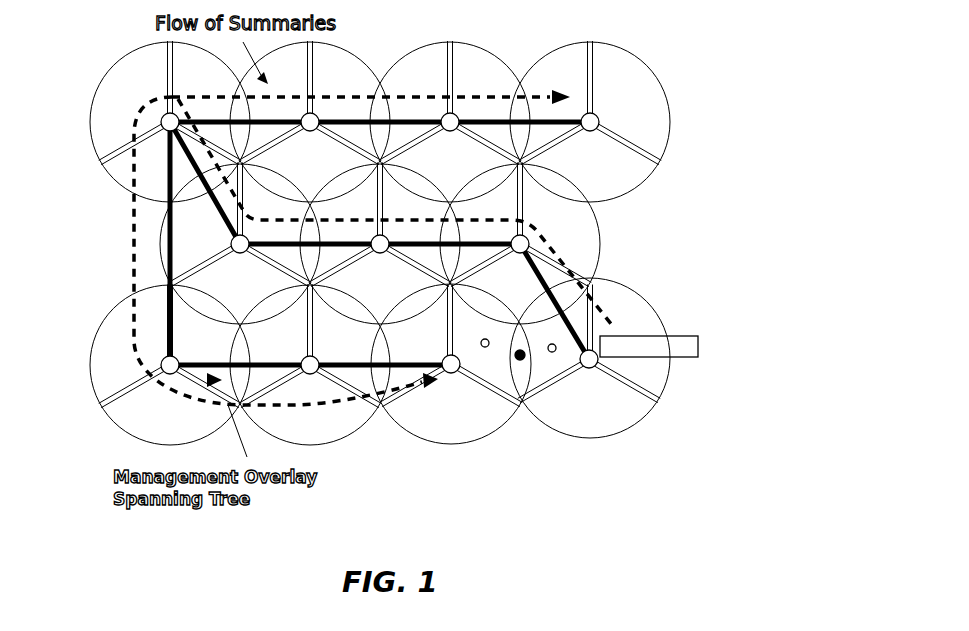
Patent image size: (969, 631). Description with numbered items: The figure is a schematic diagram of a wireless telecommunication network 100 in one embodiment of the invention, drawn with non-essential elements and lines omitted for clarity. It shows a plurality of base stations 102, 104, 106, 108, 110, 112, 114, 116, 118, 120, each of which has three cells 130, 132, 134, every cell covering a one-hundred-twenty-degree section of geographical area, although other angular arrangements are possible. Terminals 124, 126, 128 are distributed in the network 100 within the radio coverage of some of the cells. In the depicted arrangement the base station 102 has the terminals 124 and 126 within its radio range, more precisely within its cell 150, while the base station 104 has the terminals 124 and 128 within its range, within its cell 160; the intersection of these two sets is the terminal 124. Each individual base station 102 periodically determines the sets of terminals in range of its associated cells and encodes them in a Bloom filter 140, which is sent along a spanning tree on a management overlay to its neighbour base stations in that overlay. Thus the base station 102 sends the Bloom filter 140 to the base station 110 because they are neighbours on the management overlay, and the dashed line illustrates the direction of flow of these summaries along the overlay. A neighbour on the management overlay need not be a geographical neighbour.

The wireless telecommunication network 100 is at (629, 554).
The base station 102 is at (589, 368).
The base station 104 is at (452, 373).
The base station 106 is at (313, 372).
The base station 108 is at (172, 368).
The base station 110 is at (523, 247).
The base station 112 is at (381, 242).
The base station 114 is at (241, 242).
The base station 116 is at (589, 120).
The base station 118 is at (168, 120).
The base station 120 is at (310, 120).
The terminal 124 is at (524, 352).
The terminal 126 is at (556, 346).
The terminal 128 is at (489, 341).
The cell 130 is at (647, 118).
The cell 132 is at (617, 157).
The cell 134 is at (563, 77).
The Bloom filter 140 is at (688, 358).
The cell 150 is at (545, 365).
The cell 160 is at (482, 360).